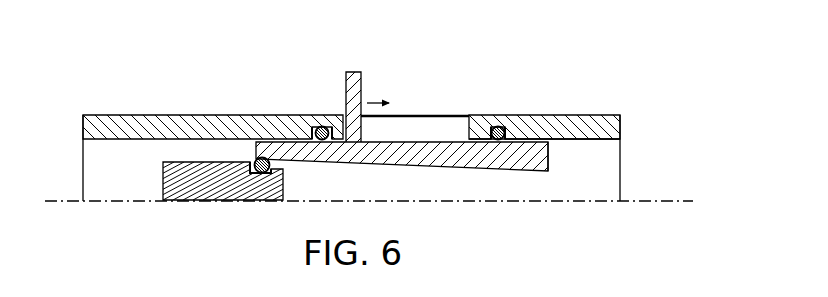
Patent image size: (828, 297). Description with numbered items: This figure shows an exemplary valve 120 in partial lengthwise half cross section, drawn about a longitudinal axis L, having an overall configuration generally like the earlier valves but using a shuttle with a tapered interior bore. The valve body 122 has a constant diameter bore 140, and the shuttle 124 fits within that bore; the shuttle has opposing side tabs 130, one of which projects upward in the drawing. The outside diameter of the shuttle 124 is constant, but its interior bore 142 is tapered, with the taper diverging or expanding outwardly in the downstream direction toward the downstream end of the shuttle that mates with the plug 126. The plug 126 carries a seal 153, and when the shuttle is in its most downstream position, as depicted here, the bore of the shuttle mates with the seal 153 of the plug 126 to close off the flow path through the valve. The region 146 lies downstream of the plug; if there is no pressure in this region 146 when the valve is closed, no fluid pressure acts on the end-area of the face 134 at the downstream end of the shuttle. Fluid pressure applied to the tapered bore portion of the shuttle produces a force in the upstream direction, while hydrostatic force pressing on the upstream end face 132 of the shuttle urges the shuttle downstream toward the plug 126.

The valve 120 is at (500, 47).
The valve body 122 is at (609, 115).
The shuttle 124 is at (405, 134).
The plug 126 is at (182, 202).
The side tabs 130 is at (377, 68).
The upstream end face 132 is at (533, 173).
The face of the downstream end of the shuttle 134 is at (257, 157).
The constant diameter bore 140 is at (564, 141).
The bore of the shuttle 142 is at (375, 168).
The region downstream of the plug 146 is at (167, 150).
The seal 153 is at (262, 175).
The longitudinal axis L is at (673, 200).